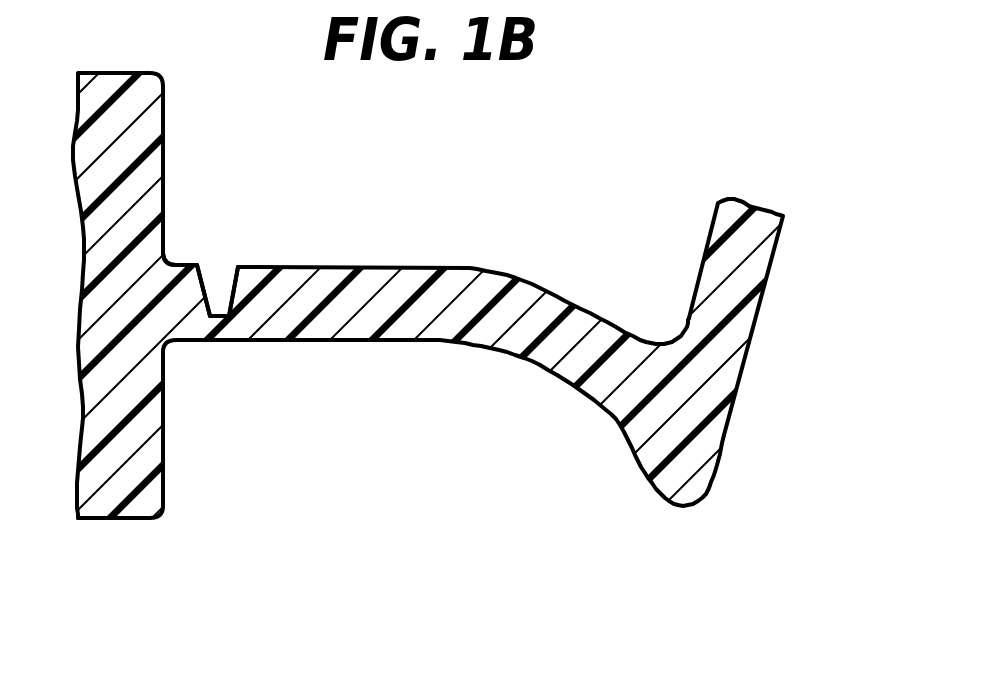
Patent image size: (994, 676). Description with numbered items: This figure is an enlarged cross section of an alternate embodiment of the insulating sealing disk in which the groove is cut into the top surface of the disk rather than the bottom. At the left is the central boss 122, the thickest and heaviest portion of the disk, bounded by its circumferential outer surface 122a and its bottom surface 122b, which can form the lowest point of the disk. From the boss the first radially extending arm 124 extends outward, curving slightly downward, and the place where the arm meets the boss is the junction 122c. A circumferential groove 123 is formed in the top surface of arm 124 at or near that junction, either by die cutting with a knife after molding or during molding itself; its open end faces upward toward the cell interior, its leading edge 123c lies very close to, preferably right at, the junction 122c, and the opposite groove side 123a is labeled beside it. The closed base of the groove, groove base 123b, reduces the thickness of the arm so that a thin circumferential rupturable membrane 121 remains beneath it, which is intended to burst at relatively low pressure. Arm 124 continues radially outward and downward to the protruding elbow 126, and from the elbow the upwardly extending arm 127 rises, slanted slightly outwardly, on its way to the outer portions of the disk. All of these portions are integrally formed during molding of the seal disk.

The rupturable membrane 121 is at (214, 334).
The central boss 122 is at (164, 142).
The circumferential outer surface of boss 122a is at (165, 115).
The bottom surface of boss 122b is at (115, 519).
The junction of radially extending arm and boss 122c is at (172, 262).
The circumferential groove 123 is at (226, 266).
The groove side wall 123a is at (236, 285).
The groove base 123b is at (217, 318).
The leading edge of groove 123c is at (222, 284).
The first radially extending arm 124 is at (432, 343).
The protruding elbow 126 is at (645, 467).
The upwardly extending arm 127 is at (752, 348).